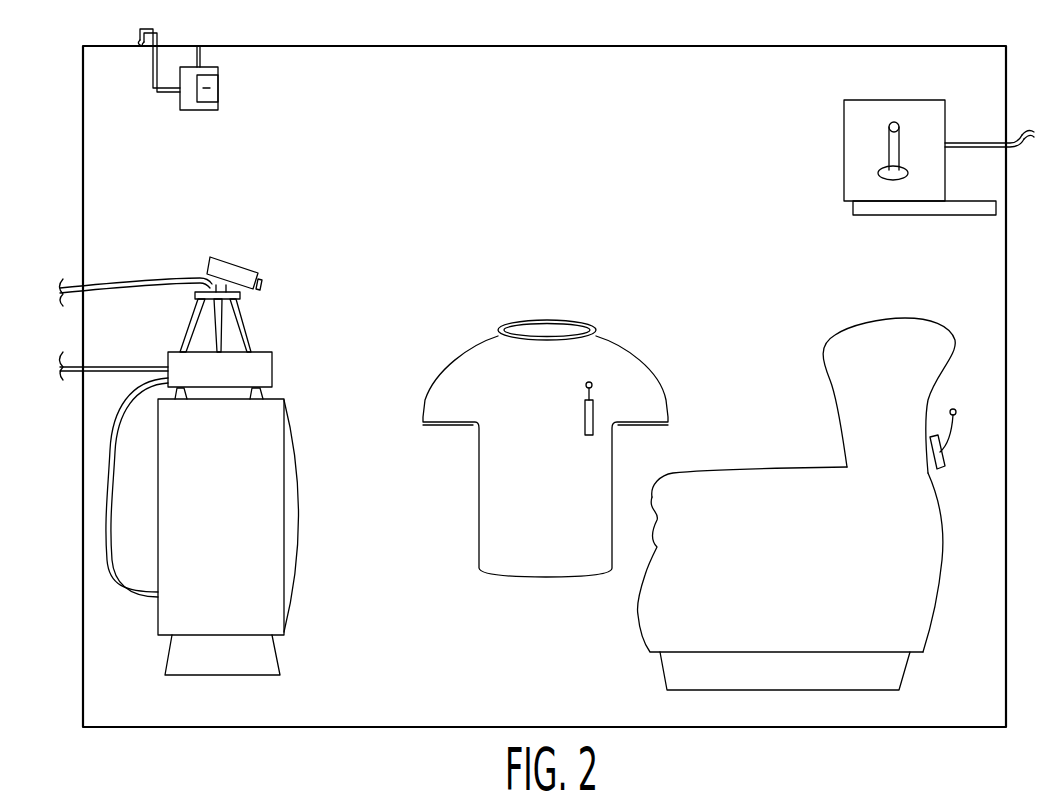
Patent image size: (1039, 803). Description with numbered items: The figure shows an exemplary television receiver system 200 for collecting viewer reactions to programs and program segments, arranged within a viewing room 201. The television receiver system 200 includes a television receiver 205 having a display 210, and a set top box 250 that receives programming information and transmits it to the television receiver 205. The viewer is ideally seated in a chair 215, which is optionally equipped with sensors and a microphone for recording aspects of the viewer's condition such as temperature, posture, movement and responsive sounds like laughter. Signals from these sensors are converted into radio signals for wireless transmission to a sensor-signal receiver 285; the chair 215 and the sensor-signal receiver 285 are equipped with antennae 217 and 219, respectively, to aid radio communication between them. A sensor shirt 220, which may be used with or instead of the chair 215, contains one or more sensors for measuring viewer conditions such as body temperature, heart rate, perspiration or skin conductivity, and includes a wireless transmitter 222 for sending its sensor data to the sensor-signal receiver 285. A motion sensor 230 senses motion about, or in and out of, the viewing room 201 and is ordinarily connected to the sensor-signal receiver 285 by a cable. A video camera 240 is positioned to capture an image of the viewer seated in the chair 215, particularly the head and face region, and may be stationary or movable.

The viewing room 201 is at (650, 36).
The television receiver system 200 is at (384, 291).
The motion sensor 230 is at (197, 112).
The video camera 240 is at (243, 265).
The set top box 250 is at (273, 355).
The television receiver 205 is at (283, 400).
The display 210 is at (310, 520).
The sensor shirt 220 is at (632, 350).
The wireless transmitter 222 is at (587, 440).
The chair 215 is at (837, 328).
The antenna 217 is at (948, 472).
The sensor-signal receiver 285 is at (844, 170).
The antenna 219 is at (889, 133).